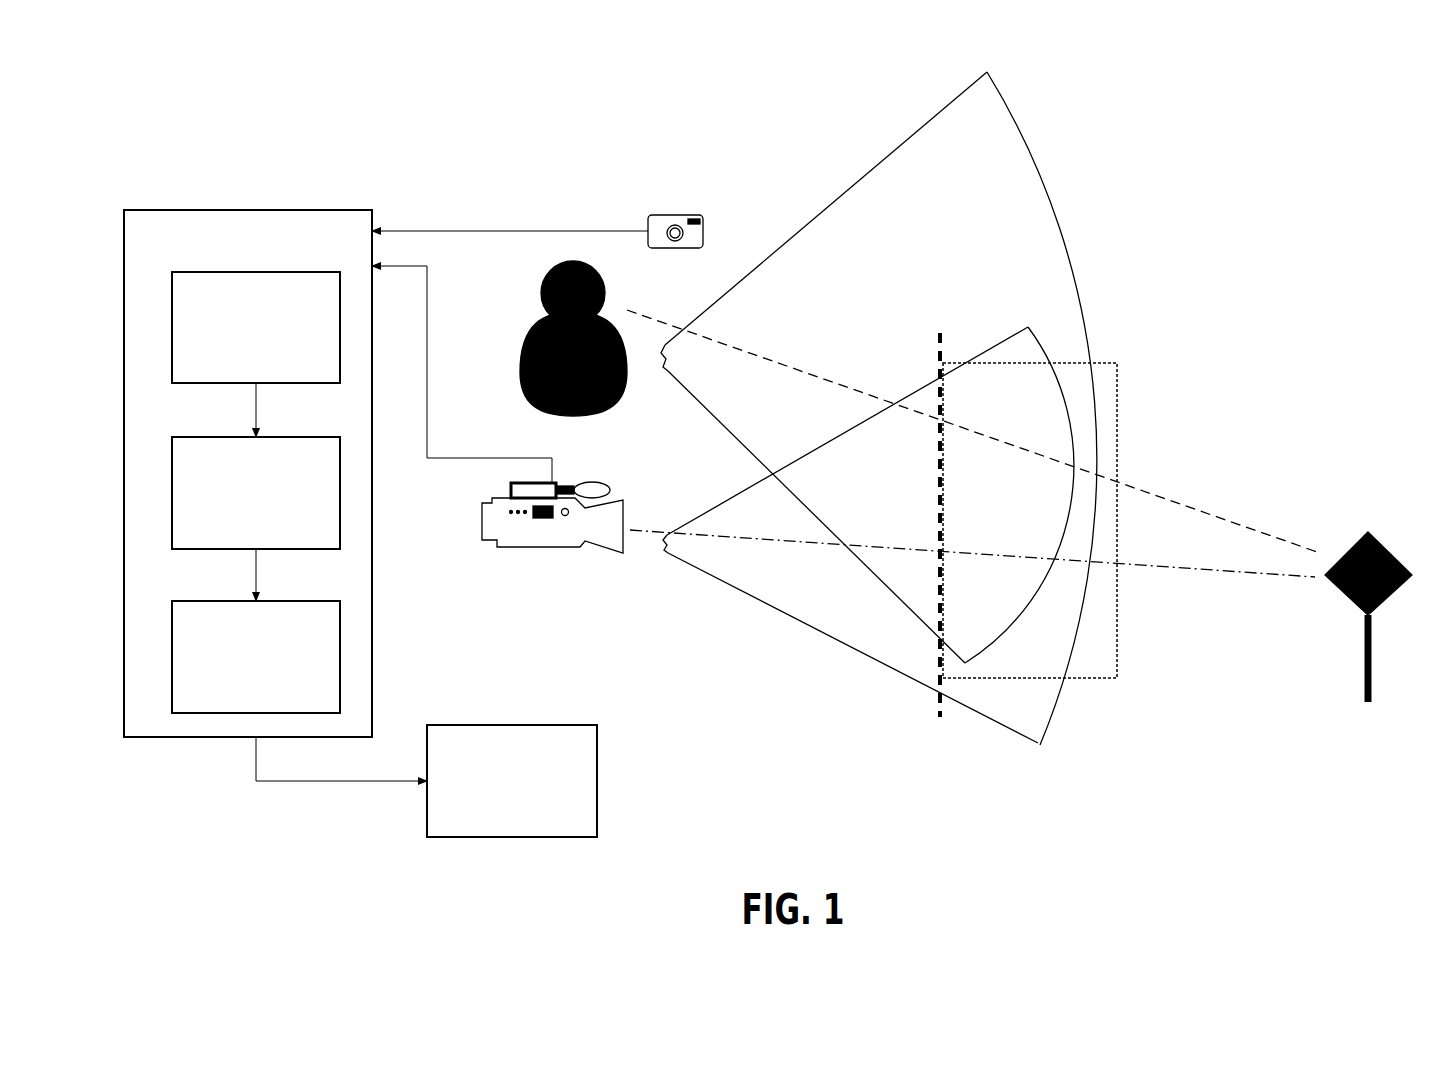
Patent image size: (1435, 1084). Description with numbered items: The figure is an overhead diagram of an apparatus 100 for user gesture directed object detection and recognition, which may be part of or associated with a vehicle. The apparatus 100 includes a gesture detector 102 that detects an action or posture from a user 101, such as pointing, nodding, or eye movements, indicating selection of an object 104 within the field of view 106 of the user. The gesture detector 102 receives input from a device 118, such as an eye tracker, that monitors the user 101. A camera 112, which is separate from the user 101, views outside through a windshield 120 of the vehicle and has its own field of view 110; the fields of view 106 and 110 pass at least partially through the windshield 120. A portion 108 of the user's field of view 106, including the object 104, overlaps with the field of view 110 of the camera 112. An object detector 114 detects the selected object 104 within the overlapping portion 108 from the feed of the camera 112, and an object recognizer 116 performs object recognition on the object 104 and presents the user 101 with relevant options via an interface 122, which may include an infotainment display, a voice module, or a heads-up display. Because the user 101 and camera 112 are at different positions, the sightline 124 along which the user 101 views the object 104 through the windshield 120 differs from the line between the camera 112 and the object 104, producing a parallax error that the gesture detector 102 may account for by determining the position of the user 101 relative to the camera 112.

The apparatus 100 is at (248, 473).
The user 101 is at (542, 297).
The gesture detector 102 is at (256, 327).
The object 104 is at (1338, 600).
The field of view of the user 106 is at (817, 235).
The portion of the user's field of view 108 is at (1117, 427).
The field of view of the camera 110 is at (800, 598).
The camera 112 is at (472, 519).
The object detector 114 is at (256, 493).
The object recognizer 116 is at (256, 657).
The device 118 is at (676, 215).
The windshield 120 is at (934, 700).
The interface 122 is at (512, 781).
The sightline 124 is at (1244, 525).